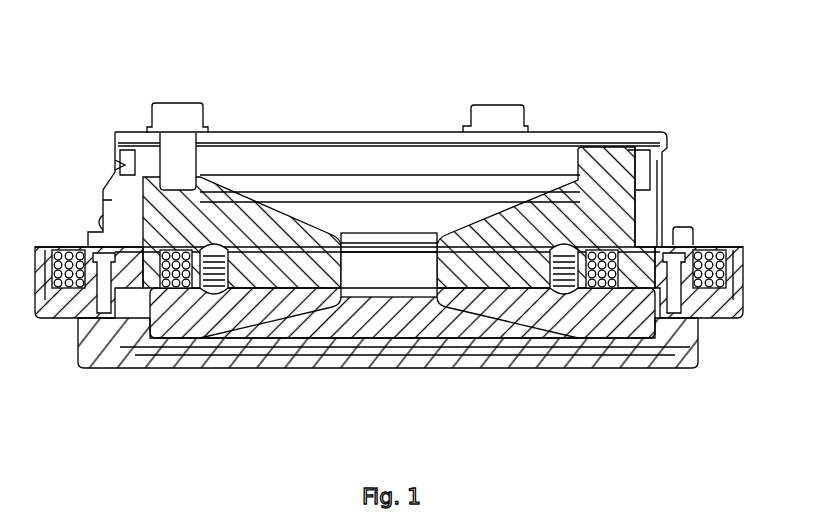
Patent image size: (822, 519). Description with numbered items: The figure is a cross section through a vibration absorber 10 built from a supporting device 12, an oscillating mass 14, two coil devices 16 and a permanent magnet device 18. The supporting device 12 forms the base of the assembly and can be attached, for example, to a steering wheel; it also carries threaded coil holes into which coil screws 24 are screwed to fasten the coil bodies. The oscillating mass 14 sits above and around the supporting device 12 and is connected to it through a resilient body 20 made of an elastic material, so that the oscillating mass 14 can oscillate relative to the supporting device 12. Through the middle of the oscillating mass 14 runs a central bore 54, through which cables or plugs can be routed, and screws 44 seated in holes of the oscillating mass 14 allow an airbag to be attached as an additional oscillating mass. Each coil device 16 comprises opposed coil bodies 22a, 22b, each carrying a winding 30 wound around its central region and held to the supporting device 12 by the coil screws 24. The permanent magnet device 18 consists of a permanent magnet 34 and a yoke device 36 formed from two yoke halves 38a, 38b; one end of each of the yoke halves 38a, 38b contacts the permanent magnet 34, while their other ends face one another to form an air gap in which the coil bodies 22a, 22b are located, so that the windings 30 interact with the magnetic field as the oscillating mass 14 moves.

The vibration absorber 10 is at (153, 79).
The supporting device 12 is at (559, 368).
The oscillating mass 14 is at (605, 131).
The coil device 16 is at (720, 243).
The permanent magnet device 18 is at (636, 202).
The resilient body 20 is at (110, 197).
The coil body 22a is at (85, 290).
The coil body 22b is at (660, 320).
The coil screw 24 is at (100, 318).
The winding 30 is at (728, 283).
The permanent magnet 34 is at (297, 275).
The yoke device 36 is at (472, 321).
The yoke half 38a is at (258, 214).
The yoke half 38b is at (213, 330).
The screw 44 is at (490, 118).
The central bore 54 is at (383, 267).